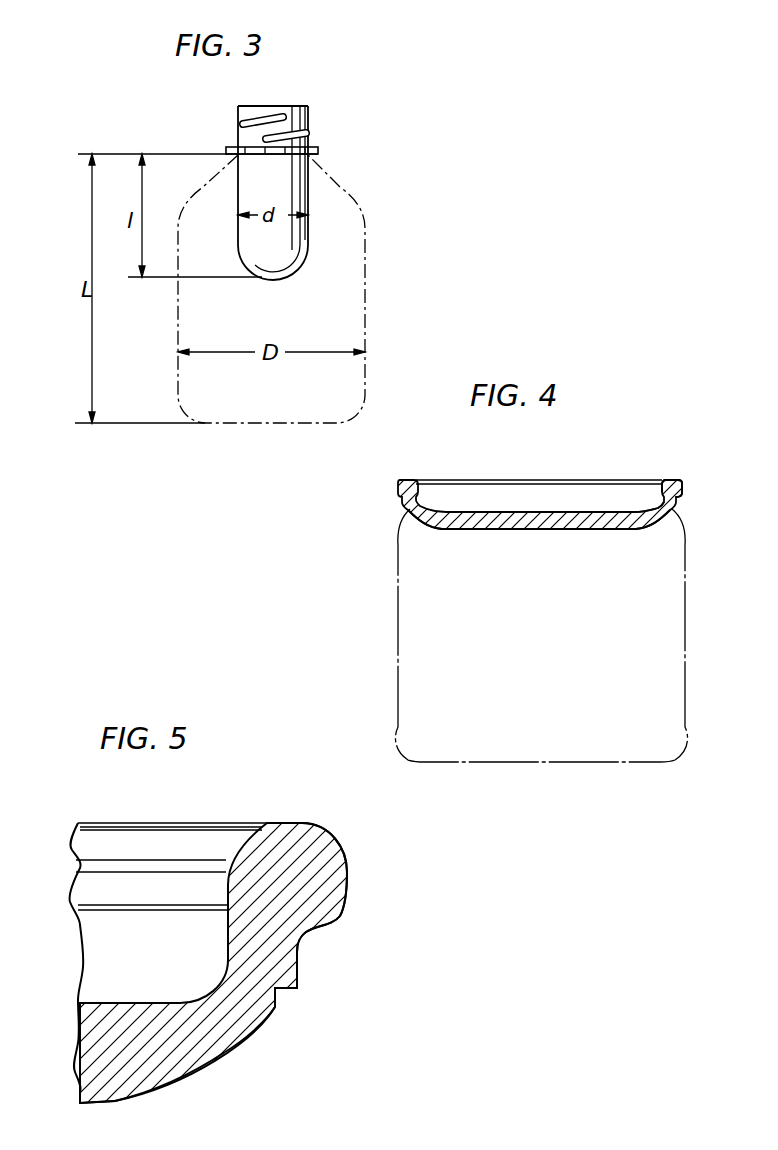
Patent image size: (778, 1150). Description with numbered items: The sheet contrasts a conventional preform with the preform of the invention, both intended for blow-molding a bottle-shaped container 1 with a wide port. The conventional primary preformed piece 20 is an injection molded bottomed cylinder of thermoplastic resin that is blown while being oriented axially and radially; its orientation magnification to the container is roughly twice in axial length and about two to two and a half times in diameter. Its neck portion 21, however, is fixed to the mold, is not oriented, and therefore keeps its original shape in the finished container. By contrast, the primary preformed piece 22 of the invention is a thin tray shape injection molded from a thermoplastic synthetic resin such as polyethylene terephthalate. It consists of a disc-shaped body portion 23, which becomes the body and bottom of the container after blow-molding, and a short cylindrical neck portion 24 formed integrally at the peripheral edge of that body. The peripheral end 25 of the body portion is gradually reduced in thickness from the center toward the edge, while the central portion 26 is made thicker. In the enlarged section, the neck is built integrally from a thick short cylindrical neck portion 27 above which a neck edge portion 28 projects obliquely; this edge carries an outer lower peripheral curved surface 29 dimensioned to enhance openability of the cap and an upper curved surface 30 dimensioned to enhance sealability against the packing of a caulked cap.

In FIG. 3, the container 1 is at (375, 228).
In FIG. 4, the container 1 is at (390, 605).
In FIG. 3, the primary preformed piece 20 is at (315, 181).
In FIG. 3, the neck portion 21 is at (309, 119).
In FIG. 4, the primary preformed piece 22 is at (557, 530).
In FIG. 5, the primary preformed piece 22 is at (164, 998).
In FIG. 4, the disc-shaped body portion 23 is at (595, 530).
In FIG. 5, the disc-shaped body portion 23 is at (178, 1063).
In FIG. 4, the cylindrical neck portion 24 is at (680, 496).
In FIG. 5, the cylindrical neck portion 24 is at (345, 918).
In FIG. 4, the peripheral end 25 is at (668, 512).
In FIG. 5, the peripheral end 25 is at (233, 1023).
In FIG. 4, the central portion 26 is at (520, 530).
In FIG. 5, the central portion 26 is at (75, 1088).
In FIG. 5, the thick short cylindrical neck portion 27 is at (280, 958).
In FIG. 5, the neck edge portion 28 is at (318, 870).
In FIG. 5, the outer lower peripheral curved surface 29 is at (322, 932).
In FIG. 5, the upper curved surface 30 is at (300, 821).